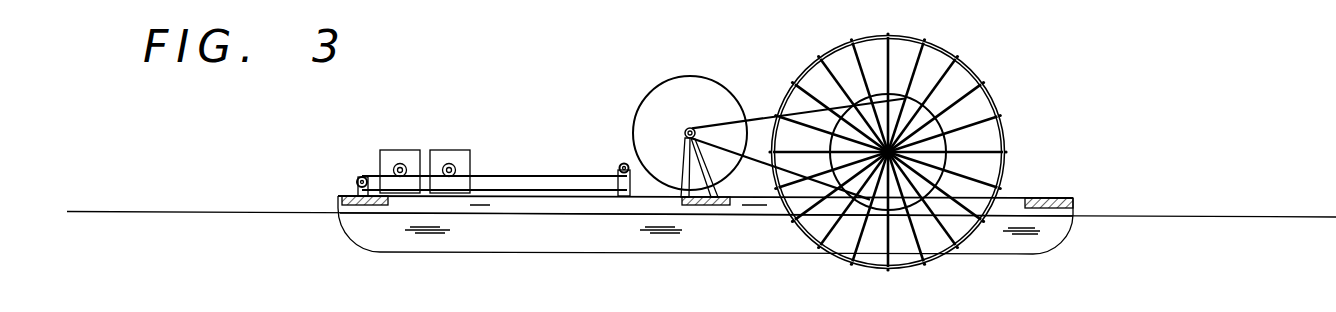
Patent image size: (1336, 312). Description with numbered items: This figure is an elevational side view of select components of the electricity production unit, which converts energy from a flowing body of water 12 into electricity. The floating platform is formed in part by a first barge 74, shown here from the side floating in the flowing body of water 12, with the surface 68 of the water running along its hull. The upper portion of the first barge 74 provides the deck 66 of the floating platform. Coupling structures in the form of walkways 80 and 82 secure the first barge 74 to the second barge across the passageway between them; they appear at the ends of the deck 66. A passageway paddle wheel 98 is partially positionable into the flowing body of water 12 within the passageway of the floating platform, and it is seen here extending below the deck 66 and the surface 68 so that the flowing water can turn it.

The flowing body of water 12 is at (1253, 217).
The deck 66 is at (1013, 198).
The surface 68 is at (1150, 217).
The first barge 74 is at (1045, 255).
The walkway 80 is at (1058, 198).
The walkway 82 is at (352, 195).
The passageway paddle wheel 98 is at (995, 97).